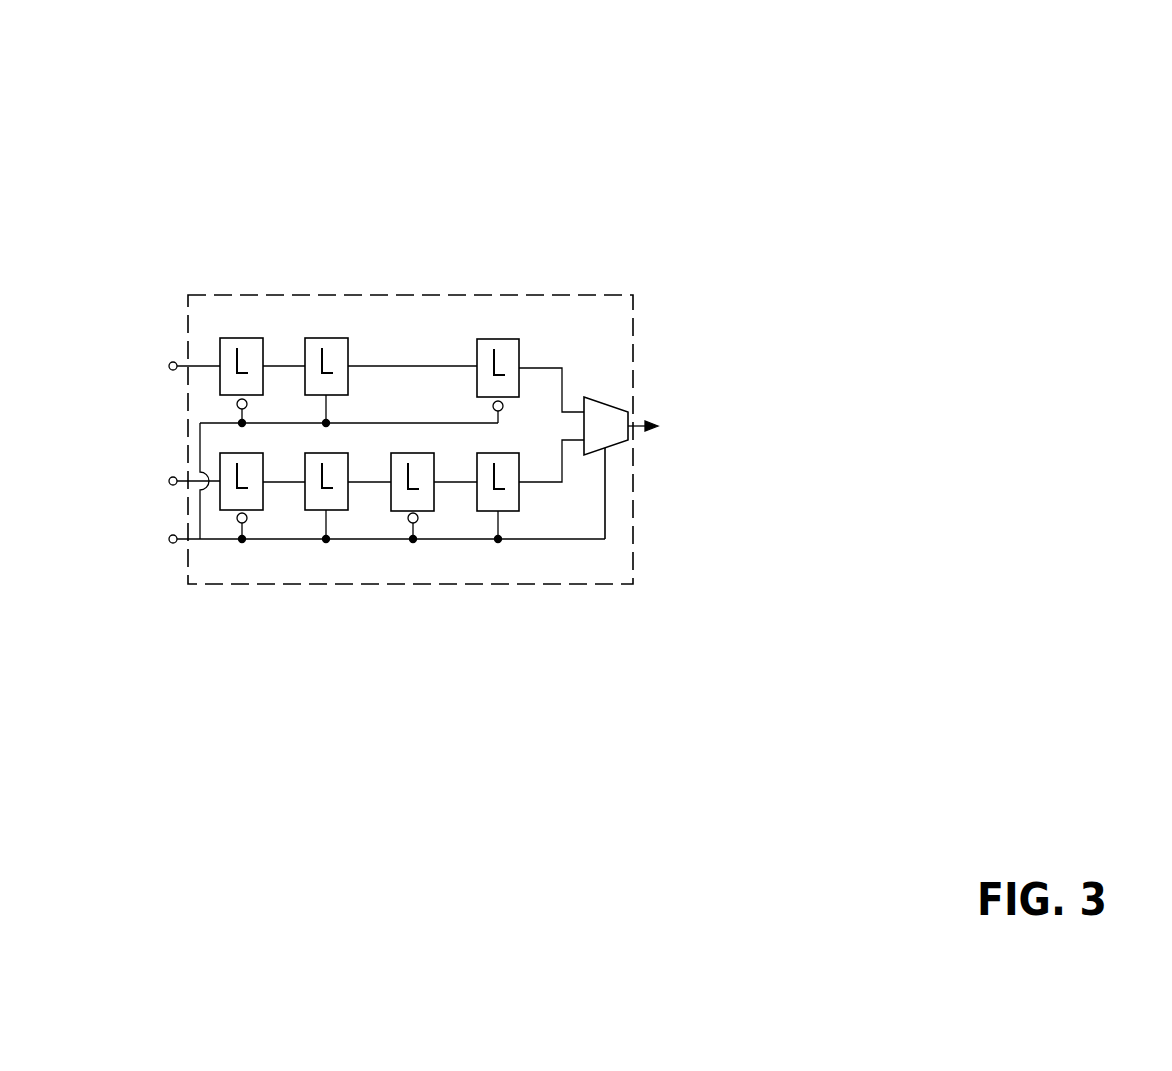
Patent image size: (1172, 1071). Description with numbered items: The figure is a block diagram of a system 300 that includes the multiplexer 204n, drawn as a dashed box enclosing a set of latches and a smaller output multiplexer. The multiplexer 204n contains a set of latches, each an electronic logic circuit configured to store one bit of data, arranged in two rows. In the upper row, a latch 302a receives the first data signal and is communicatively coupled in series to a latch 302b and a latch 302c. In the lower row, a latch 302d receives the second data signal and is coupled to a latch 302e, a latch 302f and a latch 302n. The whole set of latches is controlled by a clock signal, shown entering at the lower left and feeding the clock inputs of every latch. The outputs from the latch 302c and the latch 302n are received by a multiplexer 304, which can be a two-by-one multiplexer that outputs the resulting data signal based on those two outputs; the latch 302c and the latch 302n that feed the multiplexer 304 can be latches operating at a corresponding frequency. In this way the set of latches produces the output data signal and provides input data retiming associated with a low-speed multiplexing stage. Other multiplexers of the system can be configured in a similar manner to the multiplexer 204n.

The system 300 is at (926, 54).
The multiplexer 204n is at (238, 294).
The latch 302a is at (229, 337).
The latch 302b is at (332, 337).
The latch 302c is at (490, 338).
The latch 302d is at (229, 452).
The latch 302e is at (314, 452).
The latch 302f is at (400, 452).
The latch 302n is at (486, 452).
The multiplexer 304 is at (608, 397).